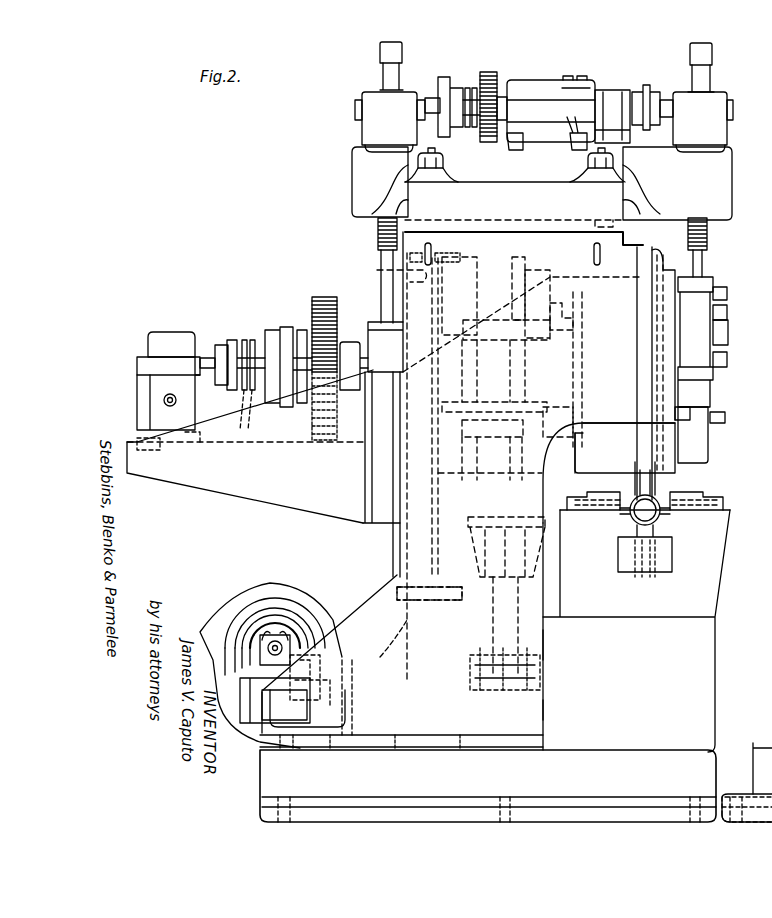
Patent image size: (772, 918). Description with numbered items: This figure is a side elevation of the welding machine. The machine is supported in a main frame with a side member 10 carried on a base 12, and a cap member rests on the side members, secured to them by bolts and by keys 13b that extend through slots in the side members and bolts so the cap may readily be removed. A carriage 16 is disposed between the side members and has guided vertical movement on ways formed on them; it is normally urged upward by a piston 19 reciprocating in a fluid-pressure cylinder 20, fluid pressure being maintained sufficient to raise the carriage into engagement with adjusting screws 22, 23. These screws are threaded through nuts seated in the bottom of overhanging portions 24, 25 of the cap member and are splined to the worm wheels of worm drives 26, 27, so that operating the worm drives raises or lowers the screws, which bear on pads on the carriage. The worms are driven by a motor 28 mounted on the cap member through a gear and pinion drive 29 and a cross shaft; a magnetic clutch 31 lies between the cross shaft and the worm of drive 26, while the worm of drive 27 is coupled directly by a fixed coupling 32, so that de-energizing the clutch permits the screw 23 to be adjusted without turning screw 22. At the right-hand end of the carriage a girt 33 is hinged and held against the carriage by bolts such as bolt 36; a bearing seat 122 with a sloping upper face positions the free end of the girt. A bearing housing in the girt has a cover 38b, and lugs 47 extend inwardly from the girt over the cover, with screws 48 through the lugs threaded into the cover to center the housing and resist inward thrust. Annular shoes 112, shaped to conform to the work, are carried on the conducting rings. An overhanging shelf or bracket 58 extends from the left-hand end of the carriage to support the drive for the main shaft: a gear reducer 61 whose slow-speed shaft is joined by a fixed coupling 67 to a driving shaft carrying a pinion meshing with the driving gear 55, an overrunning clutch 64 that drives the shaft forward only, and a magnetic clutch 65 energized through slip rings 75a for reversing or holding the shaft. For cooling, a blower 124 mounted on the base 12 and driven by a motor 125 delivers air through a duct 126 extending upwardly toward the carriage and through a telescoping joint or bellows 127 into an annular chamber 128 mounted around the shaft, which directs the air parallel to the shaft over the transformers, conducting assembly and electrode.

The side member 10 is at (540, 583).
The base 12 is at (690, 758).
The keys 13b is at (431, 260).
The carriage 16 is at (375, 490).
The piston 19 is at (540, 643).
The fluid-pressure cylinder 20 is at (542, 708).
The adjusting screw 22 is at (378, 238).
The adjusting screw 23 is at (707, 240).
The overhanging portion 24 is at (356, 175).
The overhanging portion 25 is at (722, 166).
The worm drive 26 is at (368, 123).
The worm drive 27 is at (722, 128).
The motor 28 is at (540, 88).
The gear and pinion drive 29 is at (491, 80).
The magnetic clutch 31 is at (452, 85).
The fixed coupling 32 is at (655, 95).
The girt 33 is at (712, 448).
The bolt 36 is at (707, 290).
The cover 38b is at (727, 332).
The lugs 47 is at (727, 292).
The screws 48 is at (727, 318).
The driving gear 55 is at (322, 300).
The shelf or bracket 58 is at (200, 486).
The gear reducer 61 is at (160, 335).
The overrunning clutch 64 is at (349, 340).
The magnetic clutch 65 is at (283, 330).
The fixed coupling 67 is at (228, 345).
The slip rings 75a is at (245, 395).
The annular shoes 112 is at (645, 448).
The bearing seat 122 is at (690, 420).
The blower 124 is at (225, 600).
The motor 125 is at (305, 612).
The duct 126 is at (428, 622).
The telescoping joint or bellows 127 is at (396, 540).
The annular chamber 128 is at (380, 262).